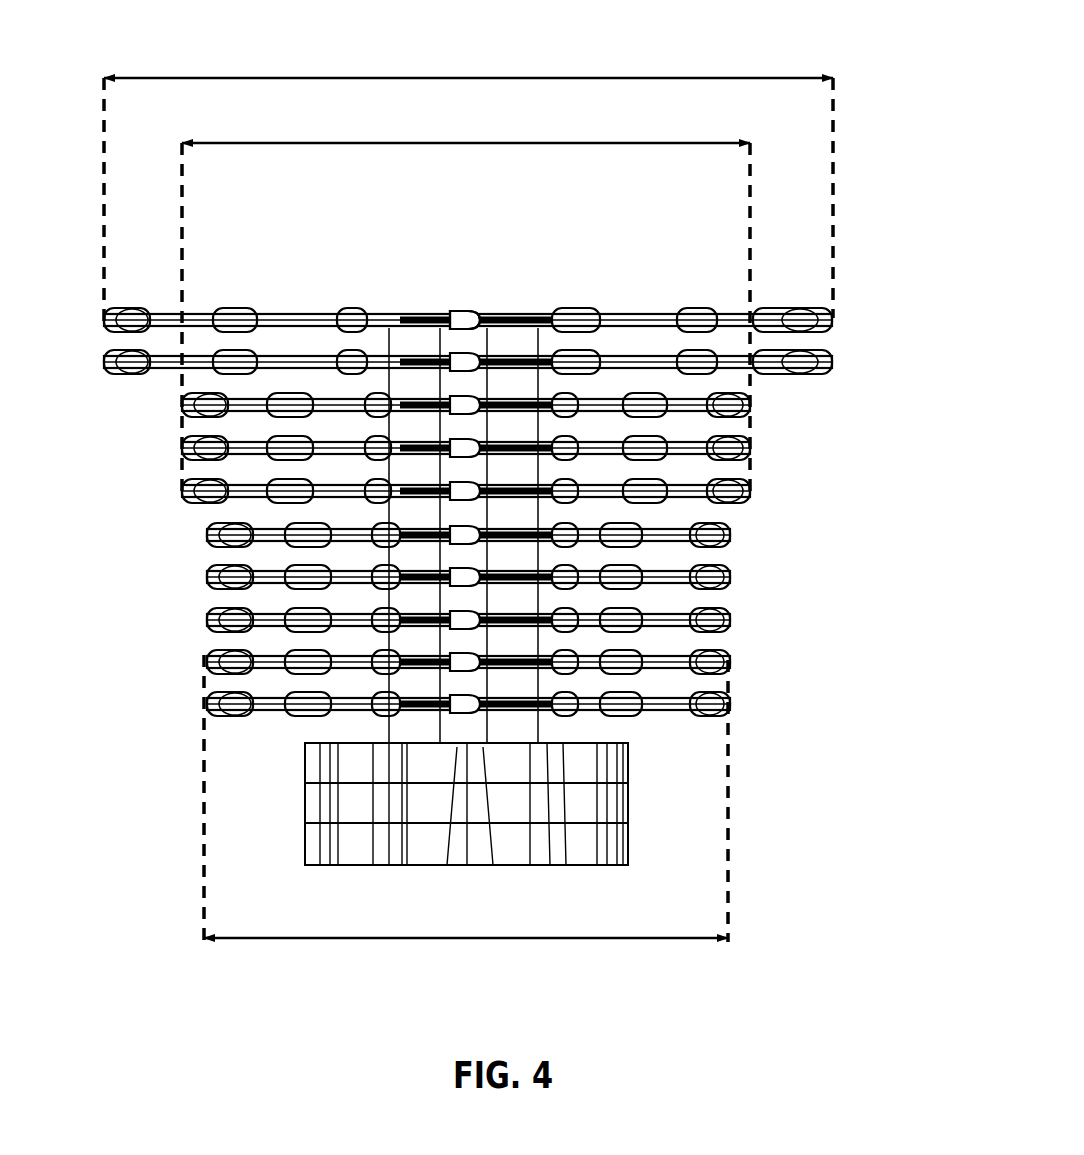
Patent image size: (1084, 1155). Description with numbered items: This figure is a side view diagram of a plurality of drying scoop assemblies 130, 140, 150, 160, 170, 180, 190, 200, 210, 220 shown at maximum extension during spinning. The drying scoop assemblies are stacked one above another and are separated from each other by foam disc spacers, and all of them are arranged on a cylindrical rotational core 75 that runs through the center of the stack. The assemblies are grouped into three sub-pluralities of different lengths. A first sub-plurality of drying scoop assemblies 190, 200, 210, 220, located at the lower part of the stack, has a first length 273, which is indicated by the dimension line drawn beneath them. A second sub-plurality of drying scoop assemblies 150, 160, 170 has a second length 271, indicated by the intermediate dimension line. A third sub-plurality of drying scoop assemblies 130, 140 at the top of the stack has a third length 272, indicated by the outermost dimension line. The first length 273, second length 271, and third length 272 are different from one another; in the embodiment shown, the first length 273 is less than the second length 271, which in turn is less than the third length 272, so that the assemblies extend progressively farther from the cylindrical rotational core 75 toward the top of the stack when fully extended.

The cylindrical rotational core 75 is at (487, 318).
The drying scoop assembly 130 is at (700, 313).
The drying scoop assembly 140 is at (807, 373).
The drying scoop assembly 150 is at (753, 409).
The drying scoop assembly 160 is at (753, 452).
The drying scoop assembly 170 is at (753, 495).
The drying scoop assembly 180 is at (733, 538).
The drying scoop assembly 190 is at (170, 572).
The drying scoop assembly 200 is at (733, 621).
The drying scoop assembly 210 is at (172, 665).
The drying scoop assembly 220 is at (700, 718).
The second length 271 is at (392, 149).
The third length 272 is at (182, 76).
The first length 273 is at (697, 942).